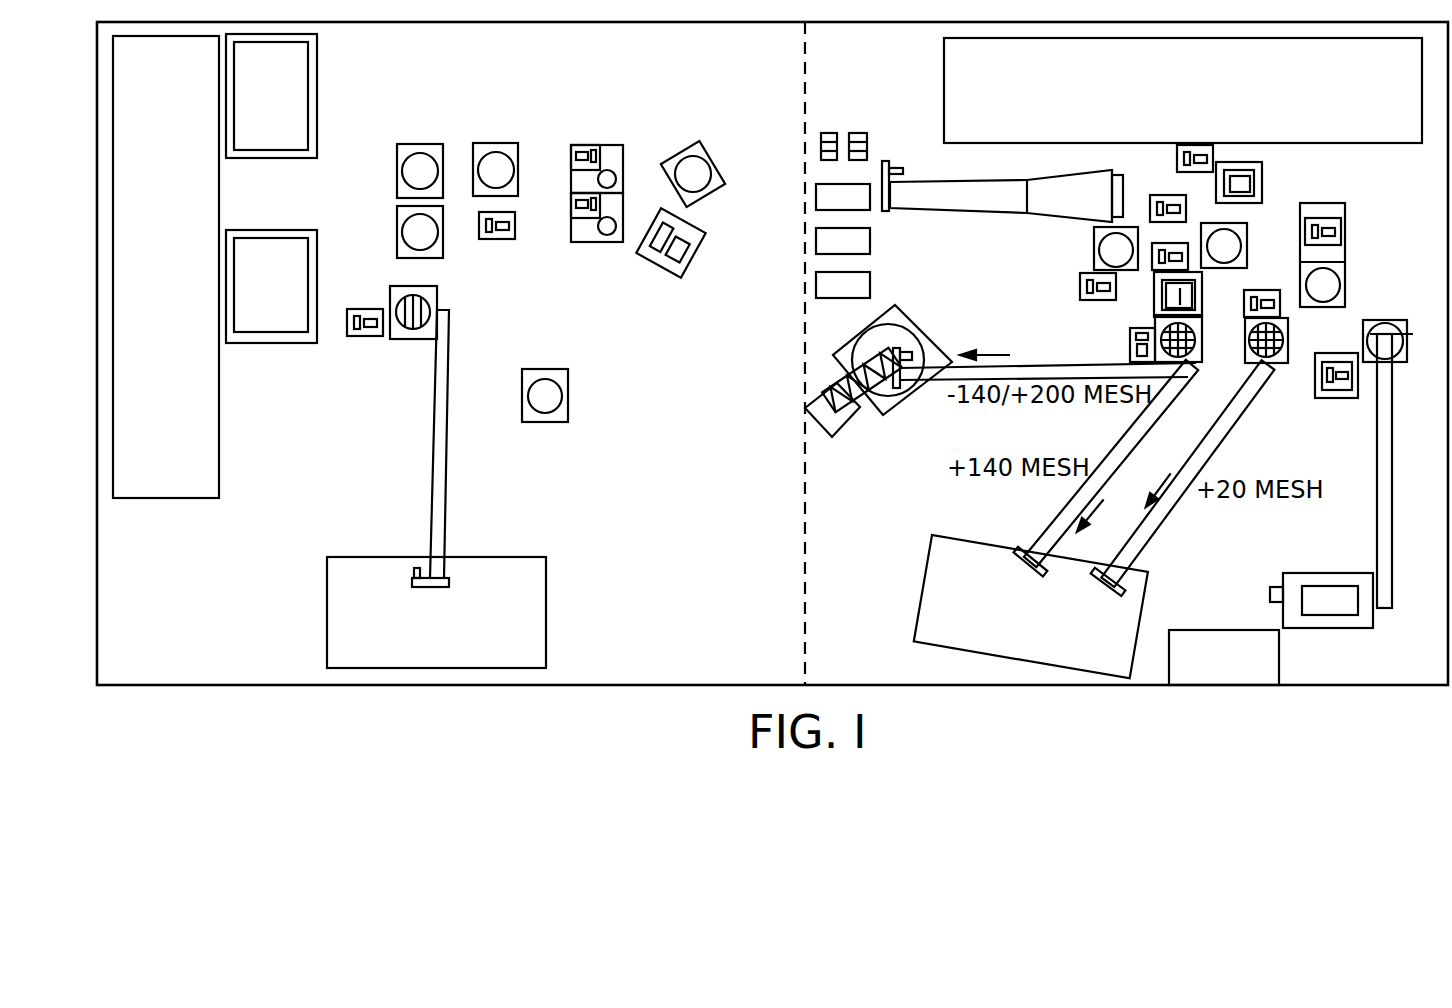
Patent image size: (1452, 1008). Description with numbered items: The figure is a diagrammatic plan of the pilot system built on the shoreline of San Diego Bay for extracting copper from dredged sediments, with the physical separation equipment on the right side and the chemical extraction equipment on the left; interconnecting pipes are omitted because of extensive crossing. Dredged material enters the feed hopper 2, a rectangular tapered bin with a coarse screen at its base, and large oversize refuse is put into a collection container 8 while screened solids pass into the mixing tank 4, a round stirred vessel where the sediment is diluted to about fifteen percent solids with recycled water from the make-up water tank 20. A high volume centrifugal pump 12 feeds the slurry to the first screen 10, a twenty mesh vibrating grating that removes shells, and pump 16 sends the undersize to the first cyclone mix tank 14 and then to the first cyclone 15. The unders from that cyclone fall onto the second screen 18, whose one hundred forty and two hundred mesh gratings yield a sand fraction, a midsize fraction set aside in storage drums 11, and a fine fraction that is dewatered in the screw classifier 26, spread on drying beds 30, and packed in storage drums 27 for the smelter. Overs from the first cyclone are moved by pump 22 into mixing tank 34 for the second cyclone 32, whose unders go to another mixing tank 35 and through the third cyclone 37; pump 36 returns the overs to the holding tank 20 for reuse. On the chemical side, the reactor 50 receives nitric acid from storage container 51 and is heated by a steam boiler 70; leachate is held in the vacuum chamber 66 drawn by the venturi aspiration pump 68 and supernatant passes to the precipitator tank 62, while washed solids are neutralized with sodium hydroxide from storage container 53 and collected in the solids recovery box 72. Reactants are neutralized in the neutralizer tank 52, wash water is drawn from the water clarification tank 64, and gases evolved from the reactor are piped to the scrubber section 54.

The feed hopper 2 is at (1338, 573).
The mixing tank 4 is at (1391, 325).
The collection container 8 is at (988, 545).
The first screen 10 is at (1290, 340).
The storage drums 11 is at (849, 421).
The centrifugal pump 12 is at (1318, 395).
The first cyclone mix tank 14 is at (1334, 287).
The first cyclone 15 is at (1193, 351).
The pump 16 is at (1257, 290).
The second screen 18 is at (1200, 326).
The make-up water tank 20 is at (1352, 143).
The pump 22 is at (1334, 233).
The screw classifier 26 is at (968, 205).
The storage drums 27 is at (860, 133).
The drying beds 30 is at (868, 211).
The second cyclone 32 is at (1160, 300).
The mixing tank 34 is at (1228, 245).
The mixing tank 35 is at (1100, 250).
The pump 36 is at (1177, 160).
The third cyclone 37 is at (1262, 172).
The reactor 50 is at (704, 165).
The storage container 51 is at (278, 228).
The neutralizer tank 52 is at (491, 158).
The storage container 53 is at (318, 76).
The scrubber section 54 is at (422, 160).
The precipitator tank 62 is at (404, 238).
The water clarification tank 64 is at (222, 410).
The vacuum chamber 66 is at (610, 172).
The aspiration pump 68 is at (607, 235).
The steam boiler 70 is at (554, 385).
The solids recovery box 72 is at (490, 556).